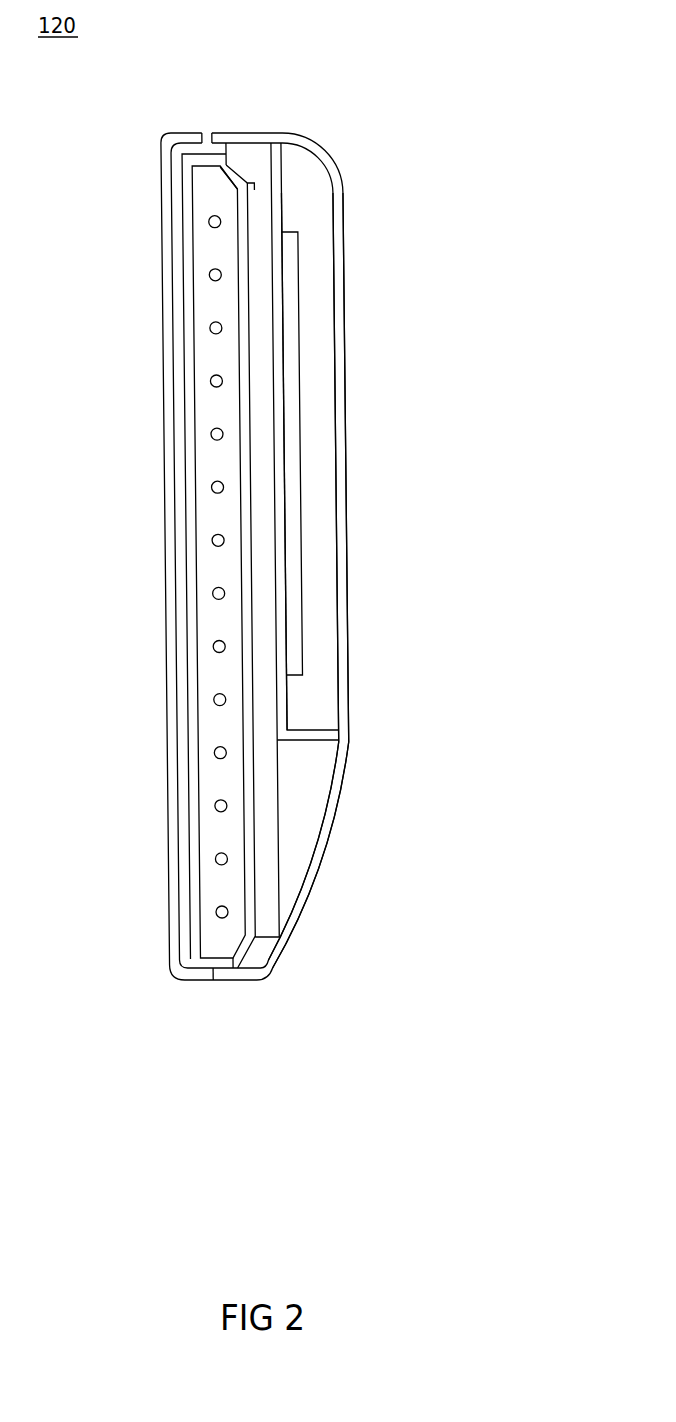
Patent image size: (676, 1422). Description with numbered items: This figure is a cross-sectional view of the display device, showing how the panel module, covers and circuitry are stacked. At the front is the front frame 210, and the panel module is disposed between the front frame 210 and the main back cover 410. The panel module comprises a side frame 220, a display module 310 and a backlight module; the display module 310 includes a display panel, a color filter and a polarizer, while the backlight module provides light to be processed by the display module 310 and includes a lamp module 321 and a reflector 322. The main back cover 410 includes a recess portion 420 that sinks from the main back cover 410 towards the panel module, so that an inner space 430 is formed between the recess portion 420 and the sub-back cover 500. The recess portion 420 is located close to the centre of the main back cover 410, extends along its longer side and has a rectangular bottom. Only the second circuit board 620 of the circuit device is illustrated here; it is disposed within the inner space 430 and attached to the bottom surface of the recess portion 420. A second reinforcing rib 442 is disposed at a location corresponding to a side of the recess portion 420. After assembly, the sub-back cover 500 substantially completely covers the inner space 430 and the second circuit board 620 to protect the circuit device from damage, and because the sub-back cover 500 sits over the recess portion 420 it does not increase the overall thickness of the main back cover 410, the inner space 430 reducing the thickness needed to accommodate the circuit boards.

The front frame 210 is at (190, 138).
The side frame 220 is at (211, 140).
The display module 310 is at (186, 305).
The lamp module 321 is at (208, 222).
The reflector 322 is at (233, 181).
The main back cover 410 is at (341, 798).
The recess portion 420 is at (283, 688).
The inner space 430 is at (320, 366).
The second reinforcing rib 442 is at (259, 208).
The sub-back cover 500 is at (345, 543).
The second circuit board 620 is at (291, 415).